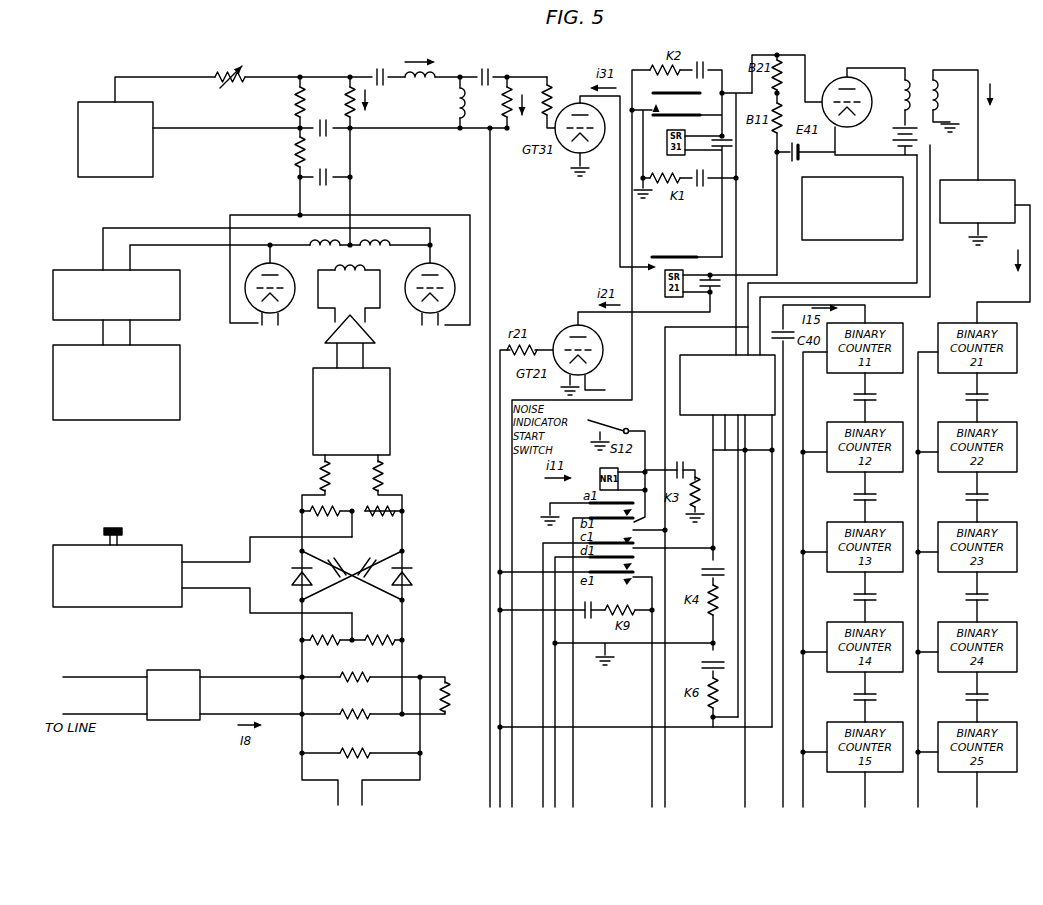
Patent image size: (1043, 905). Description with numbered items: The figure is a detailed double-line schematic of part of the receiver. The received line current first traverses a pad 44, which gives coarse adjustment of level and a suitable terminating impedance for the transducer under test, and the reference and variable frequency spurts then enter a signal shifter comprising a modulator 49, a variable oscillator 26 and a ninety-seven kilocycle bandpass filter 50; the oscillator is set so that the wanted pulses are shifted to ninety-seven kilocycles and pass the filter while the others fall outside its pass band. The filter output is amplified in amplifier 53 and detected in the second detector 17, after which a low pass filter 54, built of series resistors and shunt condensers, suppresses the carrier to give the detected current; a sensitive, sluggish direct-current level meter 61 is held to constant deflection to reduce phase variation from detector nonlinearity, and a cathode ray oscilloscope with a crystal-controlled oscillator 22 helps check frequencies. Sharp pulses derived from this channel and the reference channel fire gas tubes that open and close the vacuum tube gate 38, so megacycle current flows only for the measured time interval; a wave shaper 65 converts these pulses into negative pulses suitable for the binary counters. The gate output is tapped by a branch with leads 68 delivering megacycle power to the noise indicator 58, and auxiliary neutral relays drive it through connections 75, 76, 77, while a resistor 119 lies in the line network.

The direct-current level meter 61 is at (153, 158).
The low pass filter 54 is at (385, 155).
The detector 17 is at (452, 206).
The amplifier 53 is at (370, 336).
The 97 kilocycle bandpass filter 50 is at (390, 400).
The variable oscillator 26 is at (93, 545).
The modulator 49 is at (443, 579).
The pad 44 is at (167, 670).
The resistor 119 is at (452, 690).
The noise indicator 58 is at (722, 355).
The oscillator crystal control 1000 KC 22 is at (838, 240).
The leads 68 is at (838, 283).
The wave shaper 65 is at (996, 180).
The vacuum tube gate 38 is at (922, 57).
The connection 75 is at (713, 421).
The connection 76 is at (725, 435).
The connection 77 is at (738, 450).